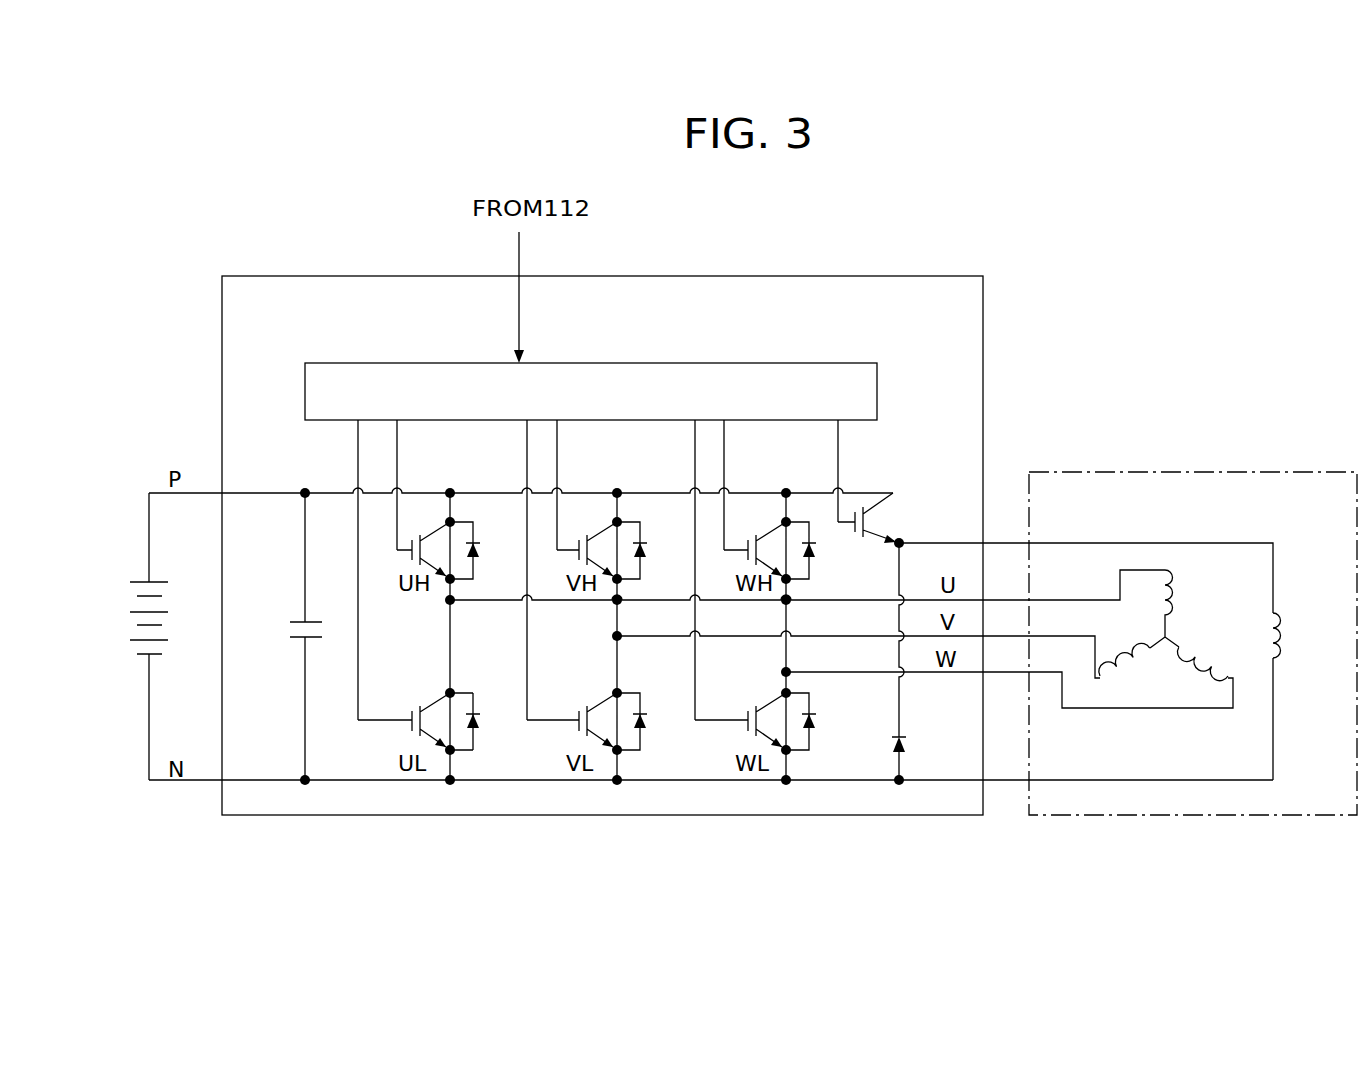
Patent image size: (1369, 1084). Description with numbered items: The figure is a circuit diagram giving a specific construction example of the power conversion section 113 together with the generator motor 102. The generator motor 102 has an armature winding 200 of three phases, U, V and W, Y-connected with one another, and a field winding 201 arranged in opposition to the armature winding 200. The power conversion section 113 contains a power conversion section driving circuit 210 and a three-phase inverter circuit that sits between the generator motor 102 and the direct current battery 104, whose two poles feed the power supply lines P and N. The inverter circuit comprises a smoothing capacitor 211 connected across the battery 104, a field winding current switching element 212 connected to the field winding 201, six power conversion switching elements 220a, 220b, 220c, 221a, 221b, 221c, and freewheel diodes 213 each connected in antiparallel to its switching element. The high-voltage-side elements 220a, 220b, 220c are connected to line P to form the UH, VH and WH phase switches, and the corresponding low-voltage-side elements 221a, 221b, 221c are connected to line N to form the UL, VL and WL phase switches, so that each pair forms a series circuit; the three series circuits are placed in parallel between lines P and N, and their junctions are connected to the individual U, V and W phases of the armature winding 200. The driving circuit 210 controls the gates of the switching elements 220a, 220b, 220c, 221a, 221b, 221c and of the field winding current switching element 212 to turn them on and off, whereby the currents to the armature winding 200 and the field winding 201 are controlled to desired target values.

The power conversion section 113 is at (868, 276).
The power conversion section driving circuit 210 is at (612, 363).
The power conversion switching element 220a is at (405, 548).
The power conversion switching element 220b is at (572, 548).
The power conversion switching element 220c is at (741, 548).
The power conversion switching element 221a is at (398, 714).
The power conversion switching element 221b is at (567, 714).
The power conversion switching element 221c is at (737, 714).
The freewheel diode 213 is at (487, 714).
The field winding current switching element 212 is at (880, 517).
The smoothing capacitor 211 is at (290, 625).
The battery 104 is at (115, 612).
The generator motor 102 is at (1152, 472).
The armature winding 200 is at (1177, 607).
The field winding 201 is at (1283, 625).